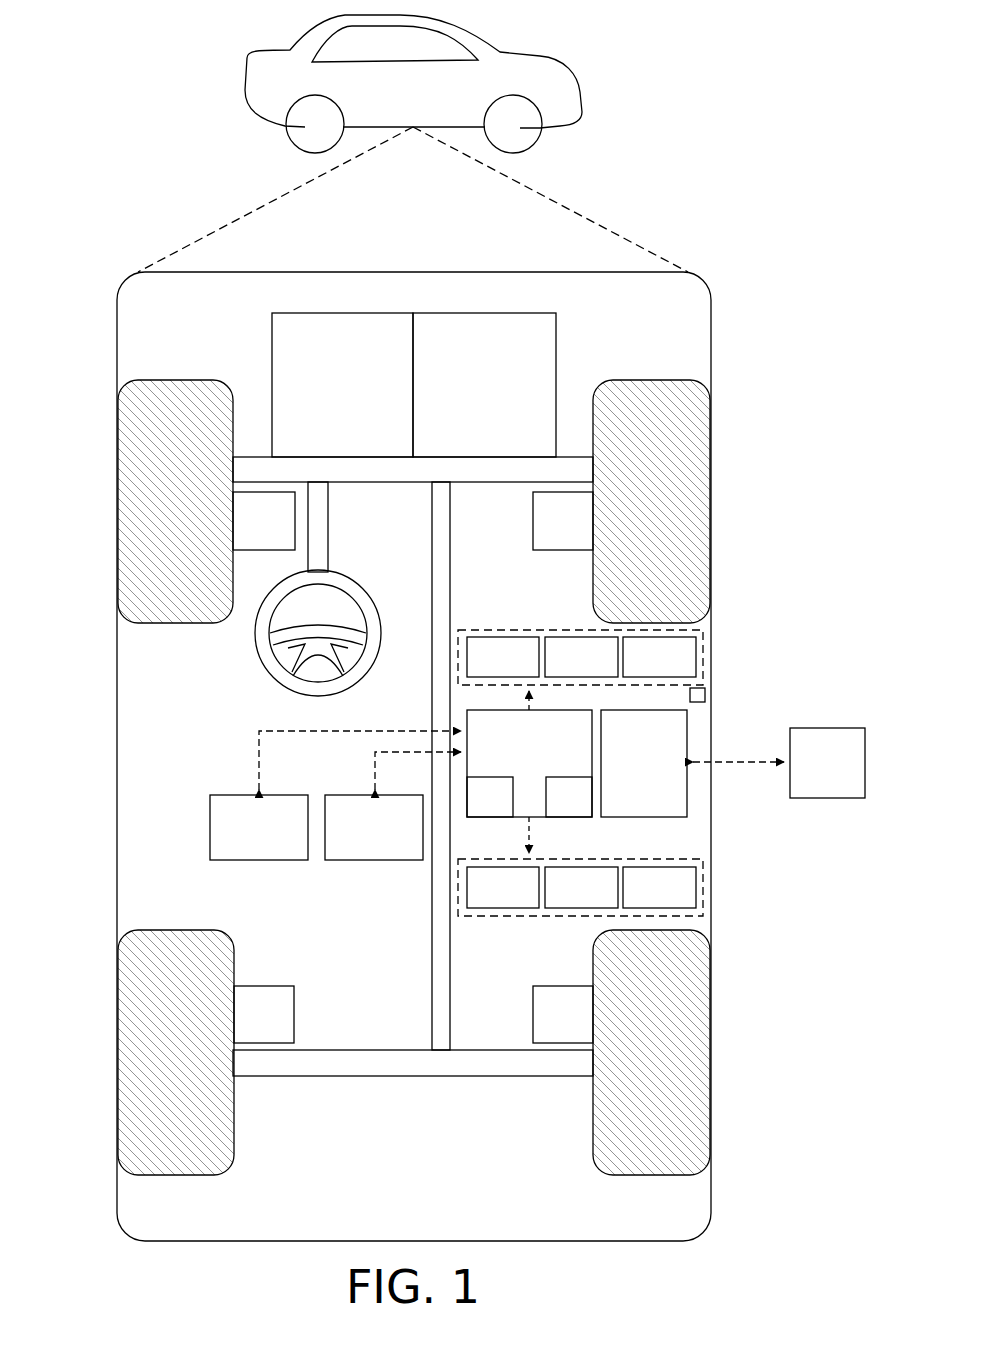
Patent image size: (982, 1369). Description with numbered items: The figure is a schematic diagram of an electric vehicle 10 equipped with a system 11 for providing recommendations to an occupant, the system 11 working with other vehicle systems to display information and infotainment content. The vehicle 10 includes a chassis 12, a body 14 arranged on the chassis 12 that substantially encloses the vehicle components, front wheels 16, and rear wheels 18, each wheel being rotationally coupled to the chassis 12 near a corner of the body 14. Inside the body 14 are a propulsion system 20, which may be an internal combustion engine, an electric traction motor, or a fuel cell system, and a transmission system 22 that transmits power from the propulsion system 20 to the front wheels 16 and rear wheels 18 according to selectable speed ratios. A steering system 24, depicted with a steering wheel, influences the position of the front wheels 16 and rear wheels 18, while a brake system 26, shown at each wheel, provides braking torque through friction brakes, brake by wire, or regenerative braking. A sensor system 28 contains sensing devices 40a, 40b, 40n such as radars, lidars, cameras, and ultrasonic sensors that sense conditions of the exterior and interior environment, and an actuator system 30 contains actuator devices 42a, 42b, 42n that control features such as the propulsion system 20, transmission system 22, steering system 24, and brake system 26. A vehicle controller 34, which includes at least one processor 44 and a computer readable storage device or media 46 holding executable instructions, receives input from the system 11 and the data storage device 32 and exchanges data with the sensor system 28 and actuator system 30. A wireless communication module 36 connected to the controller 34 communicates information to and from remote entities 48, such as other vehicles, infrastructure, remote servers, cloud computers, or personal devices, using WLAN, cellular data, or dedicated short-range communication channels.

The vehicle 10 is at (398, 103).
The system 11 is at (244, 840).
The chassis 12 is at (432, 958).
The body 14 is at (117, 757).
The front wheels 16 is at (175, 380).
The rear wheels 18 is at (175, 1175).
The propulsion system 20 is at (328, 397).
The transmission system 22 is at (469, 397).
The steering system 24 is at (348, 519).
The brake system 26 is at (249, 533).
The sensor system 28 is at (547, 630).
The actuator system 30 is at (556, 916).
The data storage device 32 is at (359, 840).
The vehicle controller 34 is at (514, 755).
The wireless communication module 36 is at (629, 775).
The sensing device 40a is at (483, 669).
The sensing device 40b is at (561, 669).
The sensing device 40n is at (639, 669).
The actuator device 42a is at (483, 899).
The actuator device 42b is at (561, 899).
The actuator device 42n is at (639, 899).
The processor 44 is at (475, 809).
The computer readable storage device or media 46 is at (554, 809).
The remote entities 48 is at (812, 775).